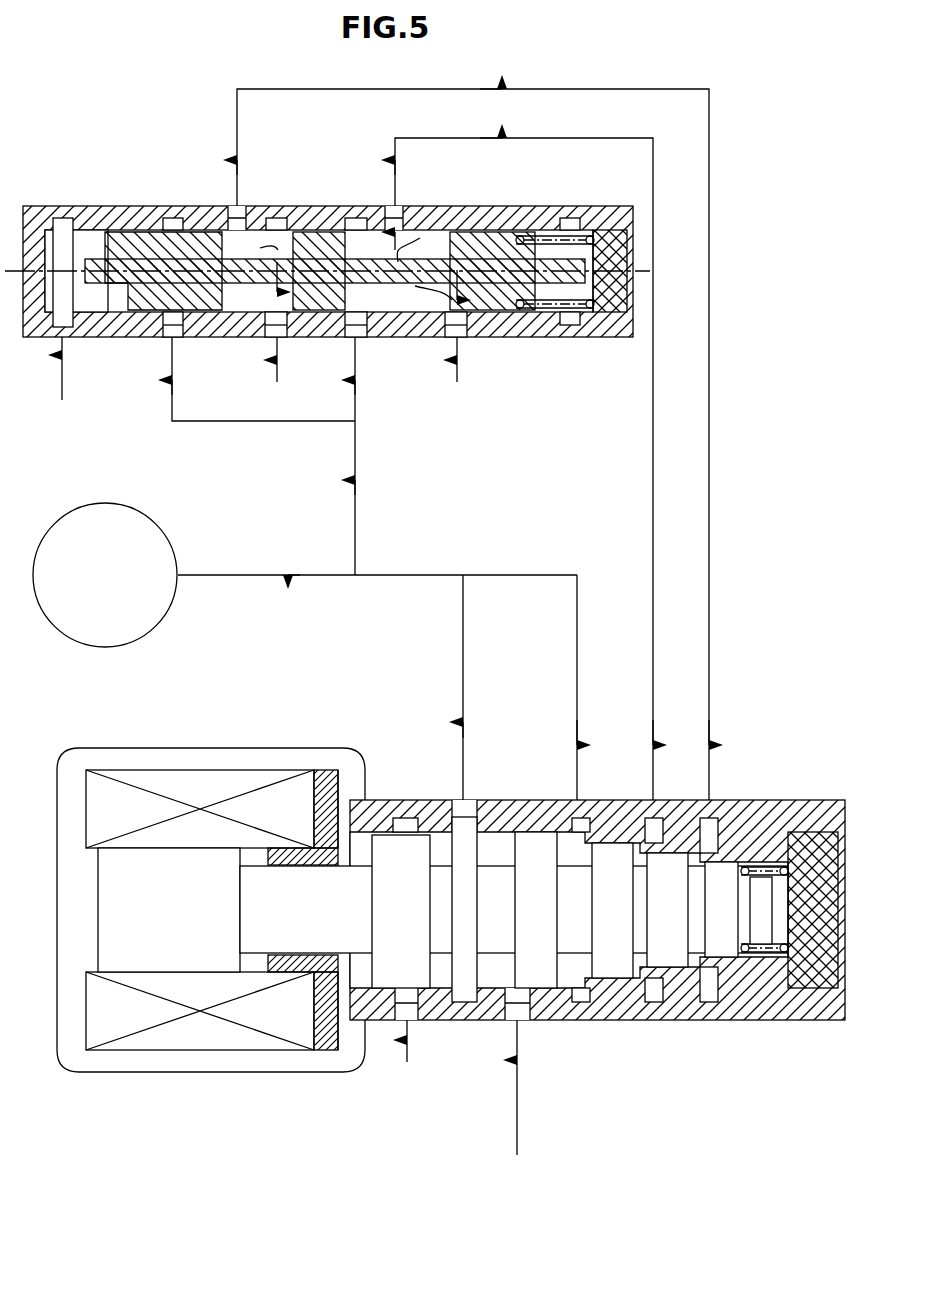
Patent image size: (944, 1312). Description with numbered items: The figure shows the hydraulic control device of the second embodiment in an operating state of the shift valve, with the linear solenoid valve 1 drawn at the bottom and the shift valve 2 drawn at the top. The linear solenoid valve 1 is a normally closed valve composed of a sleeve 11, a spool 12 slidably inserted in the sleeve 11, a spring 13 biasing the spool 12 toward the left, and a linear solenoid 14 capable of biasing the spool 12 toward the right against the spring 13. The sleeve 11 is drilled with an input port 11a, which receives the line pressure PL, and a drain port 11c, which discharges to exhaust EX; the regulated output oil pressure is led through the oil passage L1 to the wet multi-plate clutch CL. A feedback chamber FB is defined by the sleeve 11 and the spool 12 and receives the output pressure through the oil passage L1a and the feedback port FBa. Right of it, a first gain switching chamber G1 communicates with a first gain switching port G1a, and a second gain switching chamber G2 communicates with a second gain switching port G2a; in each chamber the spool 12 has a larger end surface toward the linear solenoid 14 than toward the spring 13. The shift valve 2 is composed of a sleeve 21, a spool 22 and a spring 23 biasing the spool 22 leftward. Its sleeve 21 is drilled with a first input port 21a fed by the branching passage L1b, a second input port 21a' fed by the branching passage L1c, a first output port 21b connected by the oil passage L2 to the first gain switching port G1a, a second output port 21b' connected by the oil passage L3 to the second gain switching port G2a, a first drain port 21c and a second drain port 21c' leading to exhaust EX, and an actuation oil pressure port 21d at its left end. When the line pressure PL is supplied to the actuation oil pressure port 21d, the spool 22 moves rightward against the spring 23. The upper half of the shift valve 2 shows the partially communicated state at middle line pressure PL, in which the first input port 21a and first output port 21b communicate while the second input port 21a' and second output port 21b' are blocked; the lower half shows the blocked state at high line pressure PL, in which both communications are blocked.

The linear solenoid valve 1 is at (451, 890).
The shift valve 2 is at (327, 264).
The sleeve 11 is at (820, 800).
The input port 11a is at (525, 1020).
The drain port 11c is at (415, 1020).
The spool 12 is at (403, 850).
The spring 13 is at (767, 985).
The linear solenoid 14 is at (278, 748).
The sleeve 21 is at (602, 206).
The first input port 21a is at (381, 351).
The second input port 21a' is at (194, 356).
The first output port 21b is at (425, 191).
The second output port 21b' is at (276, 201).
The first drain port 21c is at (488, 356).
The second drain port 21c' is at (308, 356).
The actuation oil pressure port 21d is at (68, 338).
The spool 22 is at (135, 245).
The spring 23 is at (552, 232).
The wet multi-plate clutch CL is at (105, 575).
The line pressure PL is at (291, 765).
The exhaust EX is at (367, 716).
The oil passage L1 is at (461, 630).
The oil passage L1a is at (575, 630).
The branching passage L1b is at (358, 412).
The branching passage L1c is at (172, 421).
The oil passage L2 is at (651, 468).
The oil passage L3 is at (712, 413).
The feedback chamber FB is at (578, 1005).
The feedback port FBa is at (572, 818).
The first gain switching chamber G1 is at (645, 990).
The first gain switching port G1a is at (645, 818).
The second gain switching chamber G2 is at (708, 985).
The second gain switching port G2a is at (712, 818).